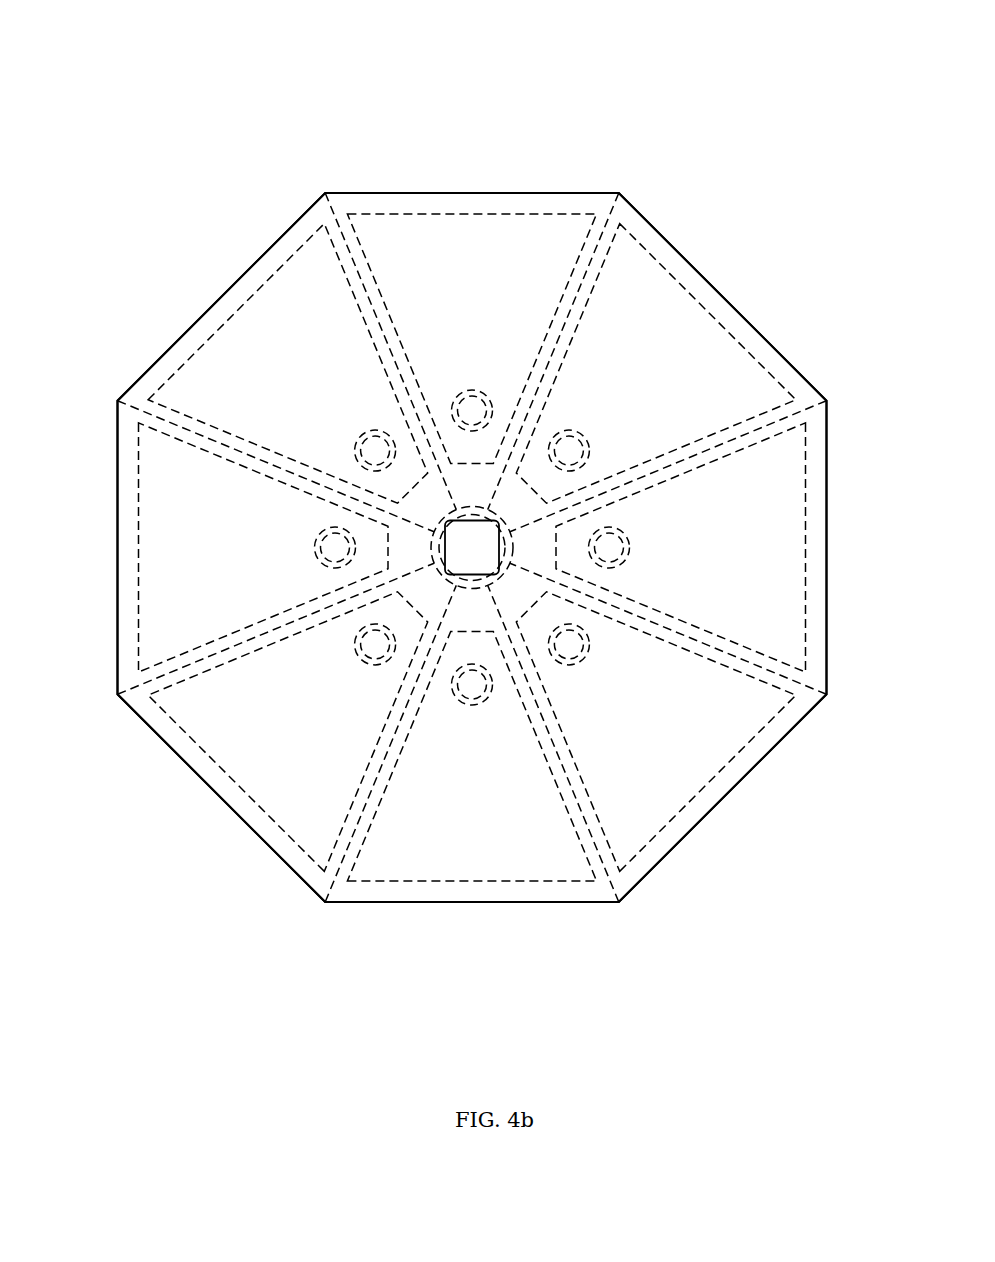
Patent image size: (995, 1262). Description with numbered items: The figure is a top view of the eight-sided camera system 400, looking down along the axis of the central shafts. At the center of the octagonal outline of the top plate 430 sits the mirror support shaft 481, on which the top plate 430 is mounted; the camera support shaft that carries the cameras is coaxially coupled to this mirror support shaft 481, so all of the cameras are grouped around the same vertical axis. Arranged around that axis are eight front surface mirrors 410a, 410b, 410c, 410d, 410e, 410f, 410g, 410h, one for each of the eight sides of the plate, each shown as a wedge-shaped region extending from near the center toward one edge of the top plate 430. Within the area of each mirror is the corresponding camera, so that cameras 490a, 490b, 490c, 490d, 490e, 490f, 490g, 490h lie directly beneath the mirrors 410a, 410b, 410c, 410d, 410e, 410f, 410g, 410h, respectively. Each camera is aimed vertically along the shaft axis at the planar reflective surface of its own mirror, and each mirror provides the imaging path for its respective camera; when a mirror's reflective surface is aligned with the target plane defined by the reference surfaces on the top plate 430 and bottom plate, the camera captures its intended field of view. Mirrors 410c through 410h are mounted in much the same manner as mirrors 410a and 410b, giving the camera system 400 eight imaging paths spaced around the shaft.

The camera system 400 is at (110, 74).
The top plate 430 is at (597, 903).
The mirror support shaft 481 is at (470, 503).
The front surface mirror 410a is at (138, 518).
The front surface mirror 410b is at (806, 518).
The front surface mirror 410c is at (267, 280).
The front surface mirror 410d is at (388, 214).
The front surface mirror 410e is at (677, 280).
The front surface mirror 410f is at (268, 817).
The front surface mirror 410g is at (393, 882).
The front surface mirror 410h is at (676, 817).
The camera 490a is at (332, 528).
The camera 490b is at (612, 528).
The camera 490c is at (360, 433).
The camera 490d is at (478, 390).
The camera 490e is at (584, 433).
The camera 490f is at (363, 660).
The camera 490g is at (486, 699).
The camera 490h is at (583, 659).